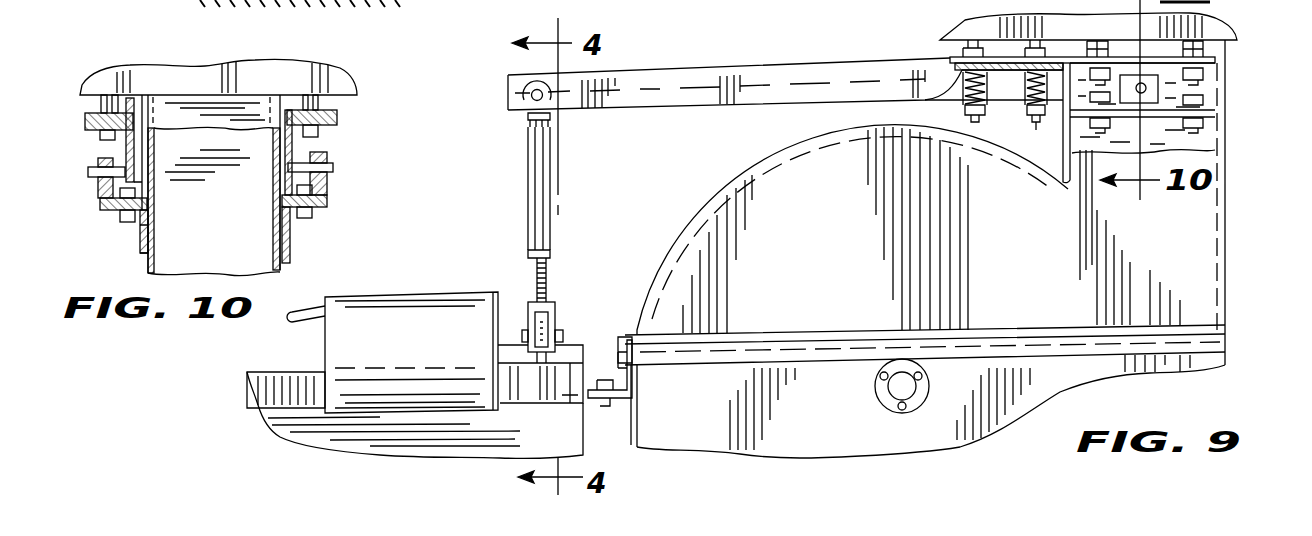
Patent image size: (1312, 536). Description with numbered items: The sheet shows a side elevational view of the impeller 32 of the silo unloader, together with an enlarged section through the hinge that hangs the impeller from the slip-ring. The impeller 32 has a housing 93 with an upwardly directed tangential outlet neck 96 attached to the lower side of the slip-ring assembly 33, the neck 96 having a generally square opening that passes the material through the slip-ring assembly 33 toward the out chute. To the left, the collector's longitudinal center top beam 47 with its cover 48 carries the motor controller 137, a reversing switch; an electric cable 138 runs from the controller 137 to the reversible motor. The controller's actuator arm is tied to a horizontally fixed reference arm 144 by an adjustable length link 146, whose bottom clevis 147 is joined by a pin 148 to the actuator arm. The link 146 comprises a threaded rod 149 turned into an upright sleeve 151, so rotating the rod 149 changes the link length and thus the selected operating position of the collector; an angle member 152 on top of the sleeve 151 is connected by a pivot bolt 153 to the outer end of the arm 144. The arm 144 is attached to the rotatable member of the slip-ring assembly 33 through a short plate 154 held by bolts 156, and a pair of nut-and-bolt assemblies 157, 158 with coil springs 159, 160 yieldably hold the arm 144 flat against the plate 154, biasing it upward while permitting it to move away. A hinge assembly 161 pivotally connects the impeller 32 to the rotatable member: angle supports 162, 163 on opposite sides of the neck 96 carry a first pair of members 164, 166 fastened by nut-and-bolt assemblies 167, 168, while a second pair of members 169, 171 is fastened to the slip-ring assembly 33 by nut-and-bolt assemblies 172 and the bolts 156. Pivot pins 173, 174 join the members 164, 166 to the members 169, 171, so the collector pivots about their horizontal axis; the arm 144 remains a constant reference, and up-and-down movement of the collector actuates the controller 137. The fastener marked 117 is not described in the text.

In FIG. 9, the impeller 32 is at (1240, 307).
In FIG. 10, the slip-ring assembly 33 is at (322, 82).
In FIG. 9, the slip-ring assembly 33 is at (970, 32).
In FIG. 9, the center top beam 47 is at (280, 386).
In FIG. 9, the cover 48 is at (310, 432).
In FIG. 9, the housing 93 is at (852, 230).
In FIG. 10, the outlet neck 96 is at (157, 264).
In FIG. 9, the outlet neck 96 is at (1200, 226).
In FIG. 9, the bolt 117 is at (1190, 128).
In FIG. 9, the controller 137 is at (400, 310).
In FIG. 9, the electric cable 138 is at (310, 323).
In FIG. 9, the reference arm 144 is at (690, 104).
In FIG. 9, the adjustable length link 146 is at (512, 170).
In FIG. 9, the bottom clevis 147 is at (556, 310).
In FIG. 9, the pin 148 is at (565, 335).
In FIG. 9, the threaded rod 149 is at (548, 270).
In FIG. 9, the upright sleeve 151 is at (536, 232).
In FIG. 9, the angle member 152 is at (527, 120).
In FIG. 9, the pivot bolt 153 is at (526, 97).
In FIG. 10, the short plate 154 is at (130, 110).
In FIG. 9, the short plate 154 is at (1195, 58).
In FIG. 10, the bolts 156 is at (108, 143).
In FIG. 9, the bolts 156 is at (1205, 82).
In FIG. 9, the nut-and-bolt assembly 157 is at (978, 120).
In FIG. 9, the nut-and-bolt assembly 158 is at (1036, 128).
In FIG. 9, the coil spring 159 is at (930, 92).
In FIG. 9, the coil spring 160 is at (1023, 93).
In FIG. 10, the hinge assembly 161 is at (66, 100).
In FIG. 10, the angle support 162 is at (140, 240).
In FIG. 9, the angle support 162 is at (1205, 147).
In FIG. 10, the angle support 163 is at (290, 240).
In FIG. 10, the hinge member 164 is at (100, 193).
In FIG. 9, the hinge member 164 is at (1205, 109).
In FIG. 10, the hinge member 166 is at (328, 195).
In FIG. 10, the nut-and-bolt assembly 167 is at (147, 226).
In FIG. 10, the nut-and-bolt assembly 168 is at (308, 218).
In FIG. 10, the hinge member 169 is at (135, 160).
In FIG. 10, the hinge member 171 is at (270, 157).
In FIG. 10, the nut-and-bolt assembly 172 is at (320, 143).
In FIG. 10, the pivot pin 173 is at (100, 172).
In FIG. 10, the pivot pin 174 is at (340, 165).